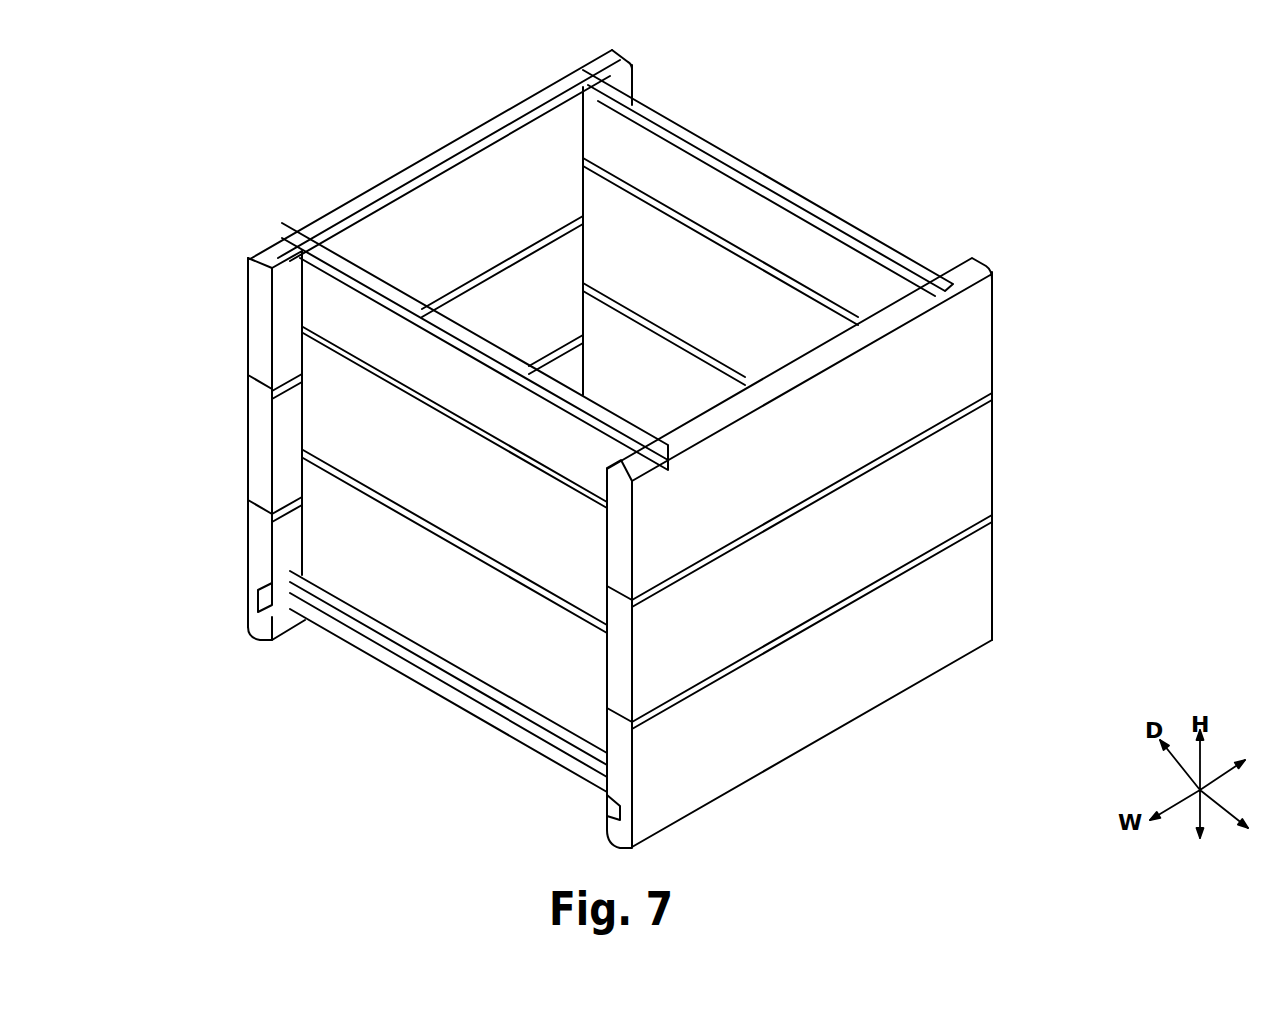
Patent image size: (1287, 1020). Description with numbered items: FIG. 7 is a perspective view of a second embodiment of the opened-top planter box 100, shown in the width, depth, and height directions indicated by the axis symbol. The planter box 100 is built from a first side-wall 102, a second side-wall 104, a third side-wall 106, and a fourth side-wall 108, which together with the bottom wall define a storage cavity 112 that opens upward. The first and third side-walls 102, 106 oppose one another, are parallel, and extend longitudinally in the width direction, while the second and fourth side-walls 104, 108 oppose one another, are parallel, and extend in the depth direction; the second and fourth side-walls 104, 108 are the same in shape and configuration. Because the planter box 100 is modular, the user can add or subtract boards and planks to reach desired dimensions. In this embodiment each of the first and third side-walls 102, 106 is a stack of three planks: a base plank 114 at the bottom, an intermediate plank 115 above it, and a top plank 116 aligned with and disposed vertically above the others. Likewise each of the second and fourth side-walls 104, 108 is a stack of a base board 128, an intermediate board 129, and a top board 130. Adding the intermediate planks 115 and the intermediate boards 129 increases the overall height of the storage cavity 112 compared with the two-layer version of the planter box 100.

The planter box 100 is at (866, 72).
The first side-wall 102 is at (388, 148).
The second side-wall 104 is at (382, 575).
The third side-wall 106 is at (850, 592).
The fourth side-wall 108 is at (845, 188).
The storage cavity 112 is at (665, 185).
The base plank 114 is at (262, 535).
The intermediate plank 115 is at (266, 426).
The top plank 116 is at (262, 323).
The base board 128 is at (501, 631).
The intermediate board 129 is at (491, 497).
The top board 130 is at (328, 290).